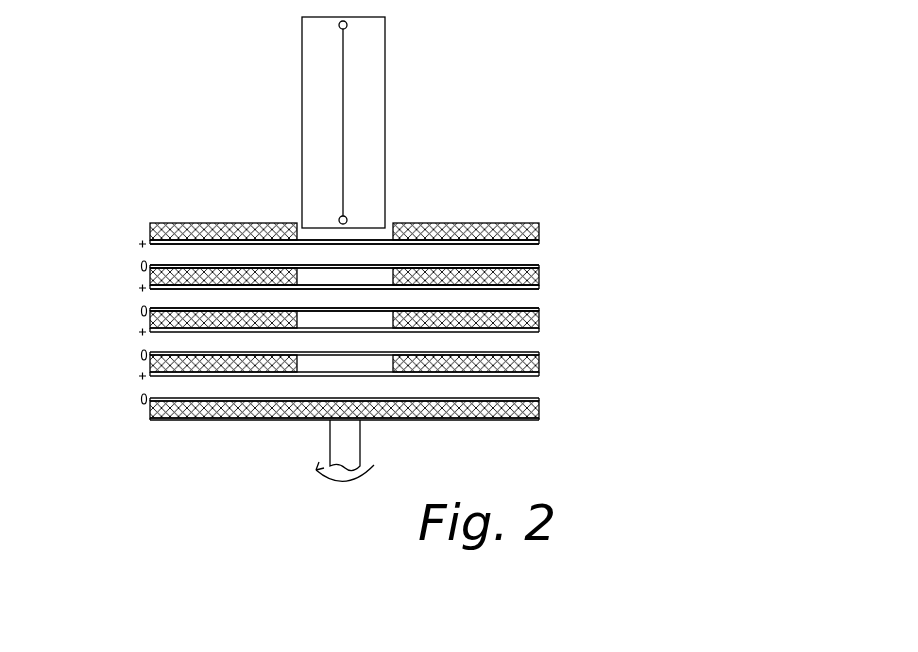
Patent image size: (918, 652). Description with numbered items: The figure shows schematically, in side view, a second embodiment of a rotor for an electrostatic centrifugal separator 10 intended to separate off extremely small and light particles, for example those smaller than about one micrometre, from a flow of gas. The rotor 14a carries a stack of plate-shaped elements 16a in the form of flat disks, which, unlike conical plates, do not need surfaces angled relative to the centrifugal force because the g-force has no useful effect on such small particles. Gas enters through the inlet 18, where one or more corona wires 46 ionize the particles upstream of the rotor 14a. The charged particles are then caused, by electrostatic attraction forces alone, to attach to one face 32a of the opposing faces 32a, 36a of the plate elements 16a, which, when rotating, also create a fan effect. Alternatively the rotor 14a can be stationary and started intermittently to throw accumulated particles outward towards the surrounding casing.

The centrifugal separator 10 is at (524, 109).
The rotor 14a is at (511, 213).
The plate-shaped elements 16a is at (543, 407).
The inlet 18 is at (372, 160).
The corona wires 46 is at (347, 115).
The opposing face 36a is at (148, 245).
The opposing face 32a is at (160, 266).